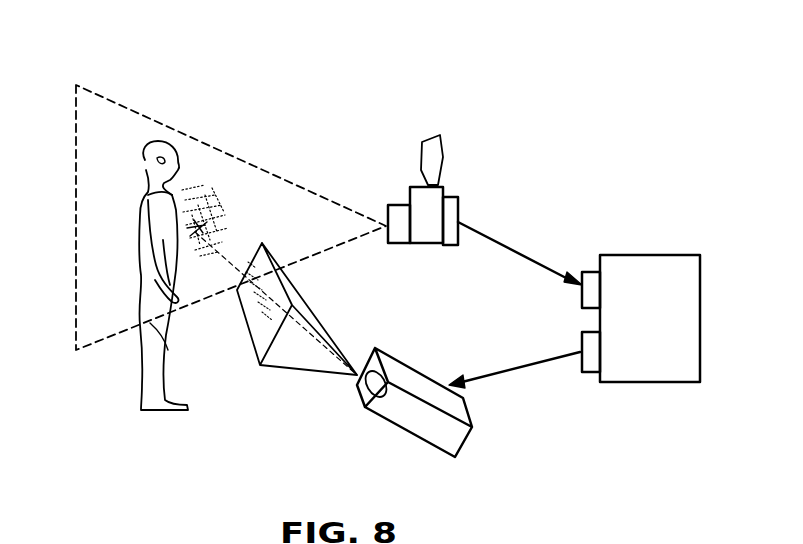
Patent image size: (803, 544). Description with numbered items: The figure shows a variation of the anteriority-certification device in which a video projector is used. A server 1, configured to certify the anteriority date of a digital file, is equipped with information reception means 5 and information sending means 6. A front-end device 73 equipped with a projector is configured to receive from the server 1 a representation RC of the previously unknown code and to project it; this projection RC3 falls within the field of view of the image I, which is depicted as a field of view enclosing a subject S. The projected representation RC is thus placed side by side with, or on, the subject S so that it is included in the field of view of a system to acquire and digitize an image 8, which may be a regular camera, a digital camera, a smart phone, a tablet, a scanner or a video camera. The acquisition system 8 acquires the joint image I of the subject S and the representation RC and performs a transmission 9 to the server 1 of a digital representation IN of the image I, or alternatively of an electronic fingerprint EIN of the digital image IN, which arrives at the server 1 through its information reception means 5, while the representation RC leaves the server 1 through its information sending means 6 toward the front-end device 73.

The server 1 is at (670, 255).
The information reception means 5 is at (593, 277).
The information sending means 6 is at (588, 360).
The system to acquire and digitize an image 8 is at (410, 243).
The transmit 9 is at (458, 197).
The front-end device 73 is at (418, 440).
The image I is at (75, 133).
The subject S is at (142, 203).
The projection RC3 is at (205, 215).
The digital representation of the image IN is at (520, 240).
The electronic fingerprint of the digital image EIN is at (533, 289).
The representation of the previously unknown code RC is at (514, 391).